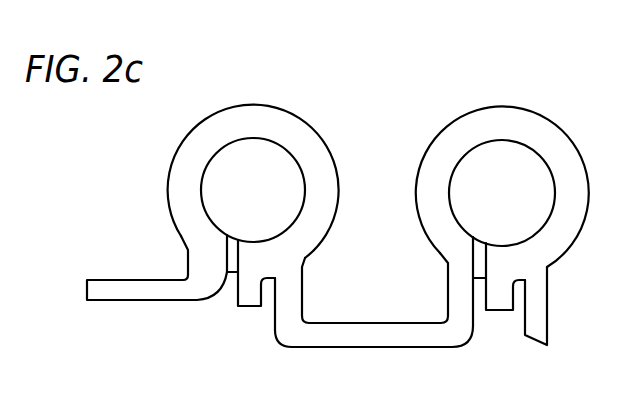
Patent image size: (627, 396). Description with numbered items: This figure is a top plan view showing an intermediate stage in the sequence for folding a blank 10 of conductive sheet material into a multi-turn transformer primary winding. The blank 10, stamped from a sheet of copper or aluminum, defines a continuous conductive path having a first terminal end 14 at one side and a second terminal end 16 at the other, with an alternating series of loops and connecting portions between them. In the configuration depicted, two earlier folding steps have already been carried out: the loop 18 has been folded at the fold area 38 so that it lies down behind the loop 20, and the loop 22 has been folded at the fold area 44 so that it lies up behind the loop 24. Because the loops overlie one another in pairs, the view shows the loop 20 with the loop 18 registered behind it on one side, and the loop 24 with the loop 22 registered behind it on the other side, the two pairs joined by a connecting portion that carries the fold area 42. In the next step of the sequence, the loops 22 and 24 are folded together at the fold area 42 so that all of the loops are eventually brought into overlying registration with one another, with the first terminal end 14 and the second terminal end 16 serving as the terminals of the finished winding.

The blank 10 is at (133, 144).
The first terminal end 14 is at (117, 279).
The second terminal end 16 is at (553, 288).
The loop 18 is at (216, 110).
The loop 24 is at (461, 120).
The loop 20 is at (231, 274).
The loop 22 is at (481, 281).
The fold area 38 is at (250, 308).
The fold area 44 is at (501, 312).
The fold area 42 is at (444, 320).